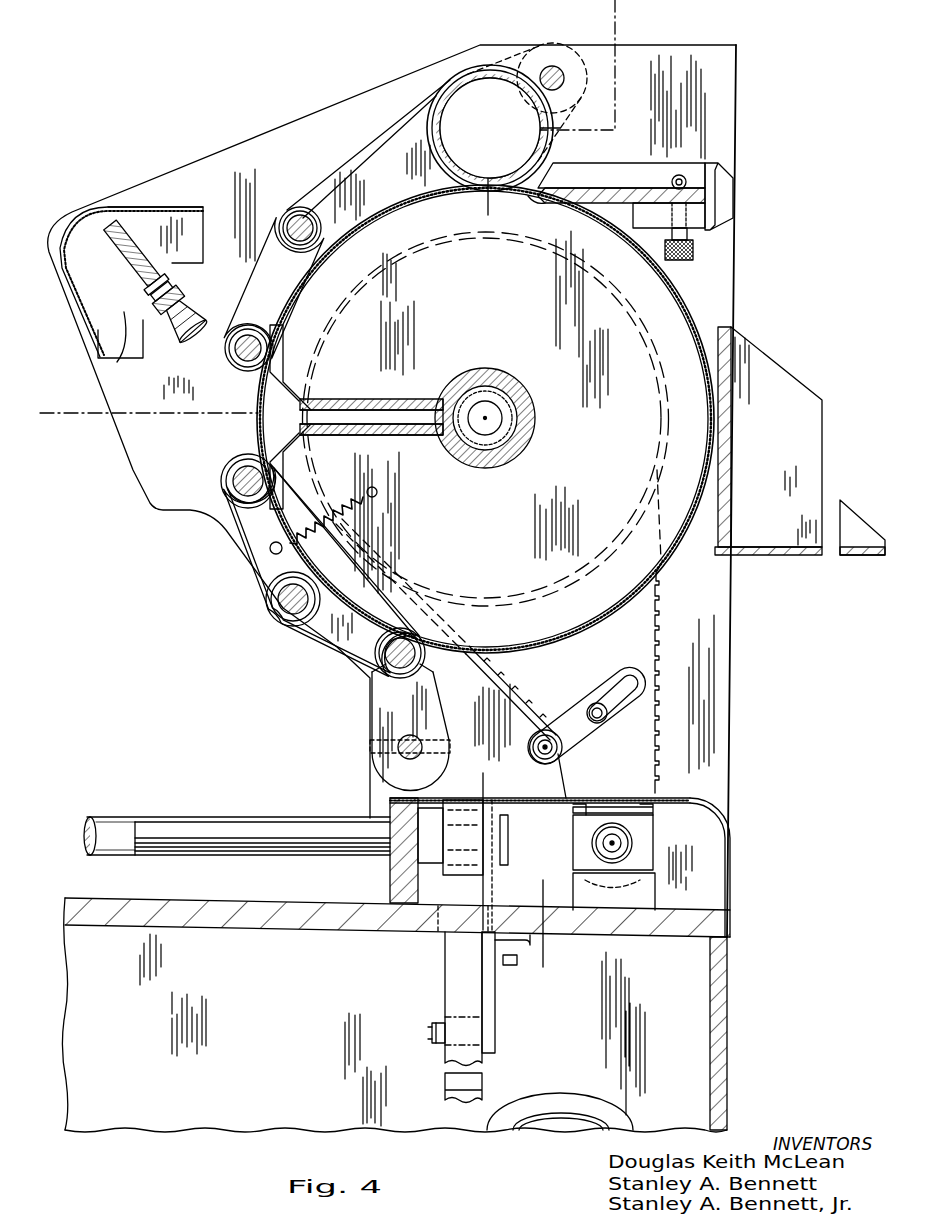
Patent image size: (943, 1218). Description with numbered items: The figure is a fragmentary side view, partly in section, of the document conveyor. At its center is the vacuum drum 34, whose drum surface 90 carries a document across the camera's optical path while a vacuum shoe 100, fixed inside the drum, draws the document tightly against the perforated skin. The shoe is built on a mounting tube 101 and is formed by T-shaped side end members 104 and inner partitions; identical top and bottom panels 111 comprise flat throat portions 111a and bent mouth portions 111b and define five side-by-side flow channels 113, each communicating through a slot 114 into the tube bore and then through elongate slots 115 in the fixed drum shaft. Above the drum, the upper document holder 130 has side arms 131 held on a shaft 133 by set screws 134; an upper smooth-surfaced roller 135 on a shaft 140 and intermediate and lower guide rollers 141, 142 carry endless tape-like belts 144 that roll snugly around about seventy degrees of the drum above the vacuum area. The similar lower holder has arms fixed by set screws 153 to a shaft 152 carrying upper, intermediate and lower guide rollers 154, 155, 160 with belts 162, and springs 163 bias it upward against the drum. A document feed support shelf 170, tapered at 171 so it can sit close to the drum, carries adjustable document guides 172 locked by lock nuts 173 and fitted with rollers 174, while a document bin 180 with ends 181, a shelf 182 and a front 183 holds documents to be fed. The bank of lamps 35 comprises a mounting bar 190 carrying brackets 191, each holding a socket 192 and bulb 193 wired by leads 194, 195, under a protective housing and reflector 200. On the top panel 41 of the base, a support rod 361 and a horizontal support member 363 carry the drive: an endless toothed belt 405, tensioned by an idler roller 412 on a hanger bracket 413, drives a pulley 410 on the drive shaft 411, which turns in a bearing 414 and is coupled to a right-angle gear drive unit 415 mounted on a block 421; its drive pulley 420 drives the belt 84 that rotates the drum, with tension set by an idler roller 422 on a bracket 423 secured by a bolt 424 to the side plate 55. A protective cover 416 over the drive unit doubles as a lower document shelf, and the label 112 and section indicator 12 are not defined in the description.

The section line 12 is at (596, 15).
The vacuum drum 34 is at (672, 560).
The bank of lamps 35 is at (180, 205).
The top panel of the base 41 is at (255, 910).
The side plate 55 is at (722, 684).
The belt 84 is at (652, 627).
The wheel 90 is at (709, 281).
The vacuum shoe 100 is at (341, 417).
The mounting tube 101 is at (505, 460).
The T-shaped side end member 104 is at (389, 492).
The top and bottom panel 111 is at (343, 436).
The flat throat portion 111a is at (372, 401).
The bent mouth portion 111b is at (286, 397).
The arm member 112 is at (373, 419).
The flow channel 113 is at (266, 398).
The slot 114 is at (398, 436).
The elongate slot 115 is at (488, 427).
The upper document holder 130 is at (309, 190).
The side arm 131 is at (540, 47).
The shaft 133 is at (578, 48).
The set screws 134 is at (488, 60).
The upper smooth surfaced roller 135 is at (443, 88).
The shaft 140 is at (621, 182).
The intermediate guide roller 141 is at (285, 215).
The lower guide roller 142 is at (229, 352).
The endless tape-like belt 144 is at (393, 127).
The shaft 152 is at (400, 752).
The set screws 153 is at (370, 746).
The upper guide roller 154 is at (246, 468).
The intermediate guide roller 155 is at (265, 607).
The lower guide roller 160 is at (418, 660).
The endless tape-like belt 162 is at (345, 652).
The spring 163 is at (316, 530).
The document feed support shelf 170 is at (640, 188).
The tapered bottom face 171 is at (561, 200).
The adjustable document guide 172 is at (722, 180).
The lock nut 173 is at (696, 250).
The roller 174 is at (685, 176).
The document bin 180 is at (800, 468).
The end 181 is at (791, 393).
The shelf 182 is at (800, 556).
The front 183 is at (724, 346).
The mounting bar 190 is at (123, 278).
The bracket 191 is at (129, 350).
The socket 192 is at (168, 300).
The bulb 193 is at (184, 320).
The lead 194 is at (162, 291).
The lead 195 is at (156, 285).
The protective housing and reflector 200 is at (133, 207).
The support rod 361 is at (126, 800).
The horizontal support member 363 is at (397, 920).
The endless belt 405 is at (447, 978).
The pulley 410 is at (478, 806).
The longitudinal drive shaft 411 is at (196, 851).
The idler roller 412 is at (436, 1022).
The hanger bracket 413 is at (496, 995).
The bearing 414 is at (408, 873).
The right-angle gear drive unit 415 is at (655, 864).
The protective cover 416 is at (697, 800).
The gear type drive pulley 420 is at (592, 800).
The block 421 is at (648, 900).
The tension adjusting idler roller 422 is at (538, 752).
The bracket 423 is at (572, 722).
The bolt 424 is at (604, 722).